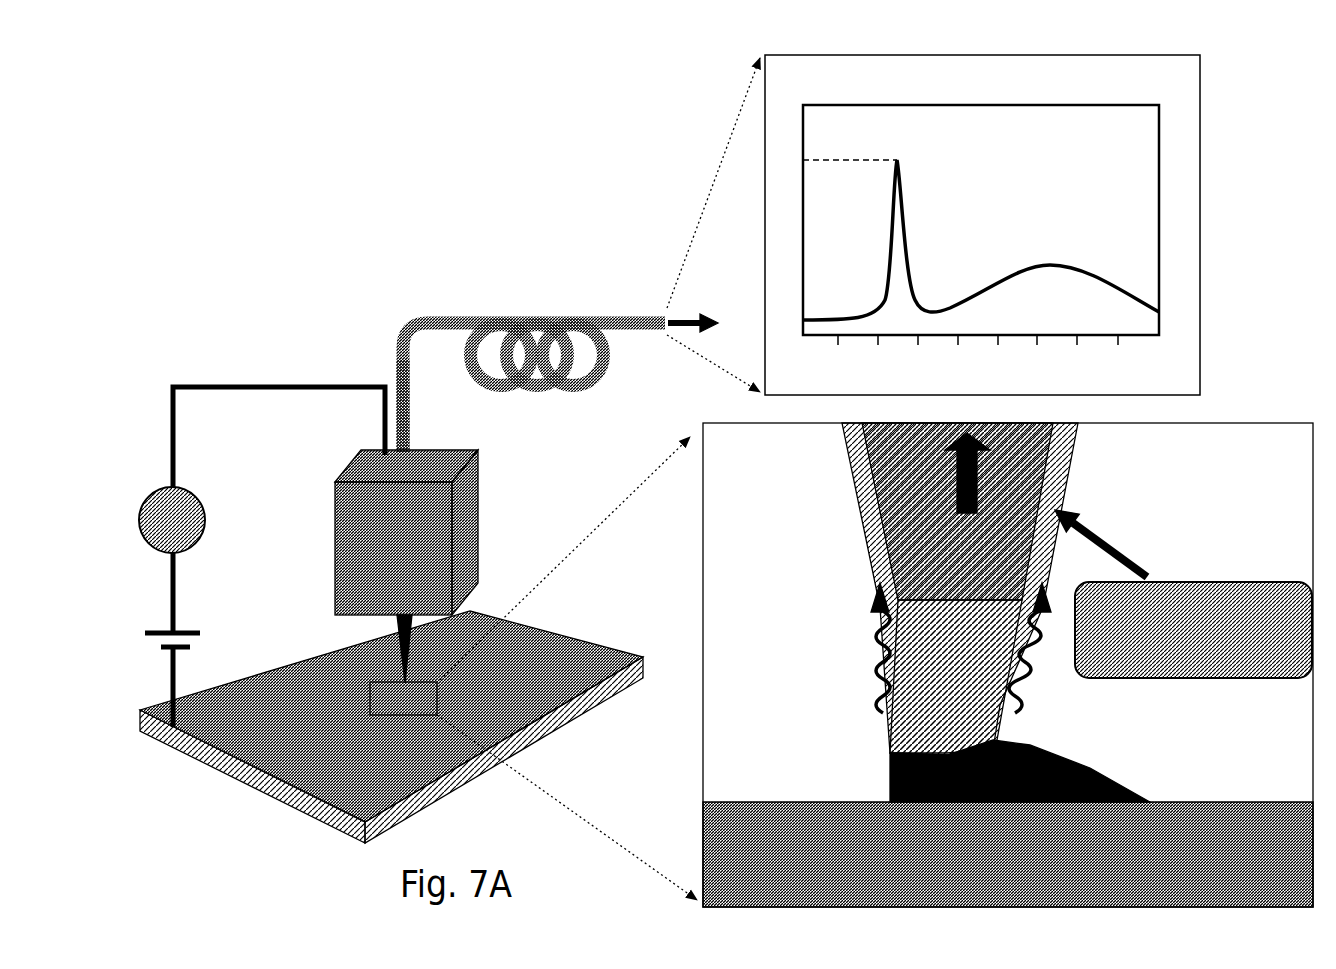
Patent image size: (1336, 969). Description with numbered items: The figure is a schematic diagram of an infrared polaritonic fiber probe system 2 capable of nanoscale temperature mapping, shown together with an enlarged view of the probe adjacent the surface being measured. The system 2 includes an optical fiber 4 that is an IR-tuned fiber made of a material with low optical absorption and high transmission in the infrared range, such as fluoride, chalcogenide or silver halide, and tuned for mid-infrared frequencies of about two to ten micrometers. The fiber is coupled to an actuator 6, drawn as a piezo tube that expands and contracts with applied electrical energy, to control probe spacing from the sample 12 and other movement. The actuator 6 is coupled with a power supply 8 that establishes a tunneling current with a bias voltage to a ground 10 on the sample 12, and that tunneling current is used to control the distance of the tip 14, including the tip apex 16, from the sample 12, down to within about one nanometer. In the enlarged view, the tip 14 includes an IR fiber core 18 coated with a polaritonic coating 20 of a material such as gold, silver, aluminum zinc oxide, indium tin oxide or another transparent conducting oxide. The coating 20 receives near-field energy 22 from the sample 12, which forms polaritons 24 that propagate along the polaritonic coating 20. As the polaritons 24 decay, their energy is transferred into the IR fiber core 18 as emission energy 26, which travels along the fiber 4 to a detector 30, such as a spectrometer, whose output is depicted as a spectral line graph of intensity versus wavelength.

The system 2 is at (705, 482).
The optical fiber 4 is at (448, 330).
The actuator 6 is at (455, 535).
The power supply 8 is at (148, 494).
The ground 10 is at (175, 727).
The sample 12 is at (700, 835).
The tip 14 is at (412, 676).
The tip apex 16 is at (953, 753).
The IR fiber core 18 is at (1013, 447).
The polaritonic coating 20 is at (1063, 487).
The near-field energy 22 is at (893, 747).
The polaritons 24 is at (877, 607).
The emission energy 26 is at (957, 482).
The detector 30 is at (765, 178).